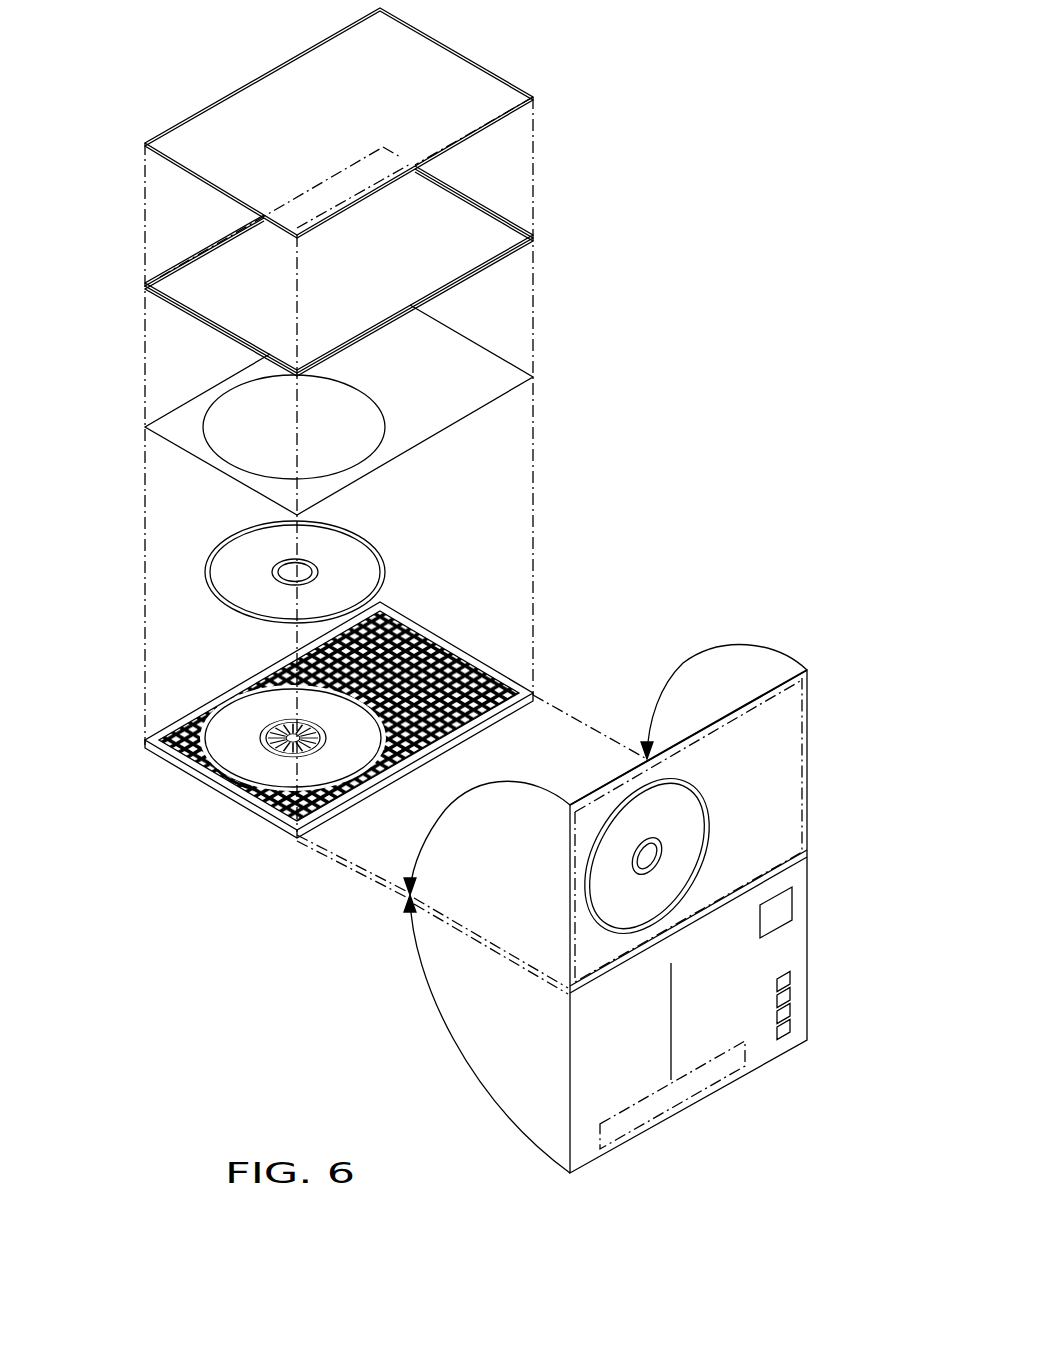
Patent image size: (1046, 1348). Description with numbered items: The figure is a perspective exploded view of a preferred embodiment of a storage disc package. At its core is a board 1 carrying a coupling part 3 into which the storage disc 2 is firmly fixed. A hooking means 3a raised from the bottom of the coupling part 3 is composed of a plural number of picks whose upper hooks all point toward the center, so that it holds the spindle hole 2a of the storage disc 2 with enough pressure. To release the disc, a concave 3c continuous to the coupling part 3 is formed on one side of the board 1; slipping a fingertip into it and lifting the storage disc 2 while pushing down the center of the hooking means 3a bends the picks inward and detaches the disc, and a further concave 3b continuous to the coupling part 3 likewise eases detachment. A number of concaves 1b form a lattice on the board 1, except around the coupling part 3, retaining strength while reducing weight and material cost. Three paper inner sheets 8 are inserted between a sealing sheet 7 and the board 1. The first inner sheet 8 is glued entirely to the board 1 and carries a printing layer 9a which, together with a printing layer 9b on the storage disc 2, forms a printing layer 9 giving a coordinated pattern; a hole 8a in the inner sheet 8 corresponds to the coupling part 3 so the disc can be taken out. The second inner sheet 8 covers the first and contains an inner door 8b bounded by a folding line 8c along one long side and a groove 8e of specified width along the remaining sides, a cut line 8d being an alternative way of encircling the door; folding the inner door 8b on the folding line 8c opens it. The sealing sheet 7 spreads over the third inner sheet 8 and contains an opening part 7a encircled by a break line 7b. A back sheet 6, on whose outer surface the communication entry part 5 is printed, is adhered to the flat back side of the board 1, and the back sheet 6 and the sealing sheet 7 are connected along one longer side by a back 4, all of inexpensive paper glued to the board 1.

The board 1 is at (313, 736).
The concaves 1b is at (440, 637).
The storage disc 2 is at (289, 572).
The spindle hole 2a is at (312, 572).
The coupling part 3 is at (276, 756).
The hooking means 3a is at (290, 756).
The concave 3b is at (318, 775).
The concave 3c is at (232, 777).
The back 4 is at (568, 993).
The communication entry part 5 is at (777, 1000).
The back sheet 6 is at (685, 1105).
The sealing sheet 7 is at (647, 889).
The opening part 7a is at (747, 734).
The break line 7b is at (694, 743).
The inner sheet 8 is at (368, 202).
The hole 8a is at (372, 428).
The inner door 8b is at (410, 78).
The folding line 8c is at (447, 149).
The cut line 8d is at (276, 70).
The groove 8e is at (433, 295).
The printing layer 9 is at (65, 442).
The printing layer 9a is at (300, 410).
The printing layer 9b is at (250, 567).